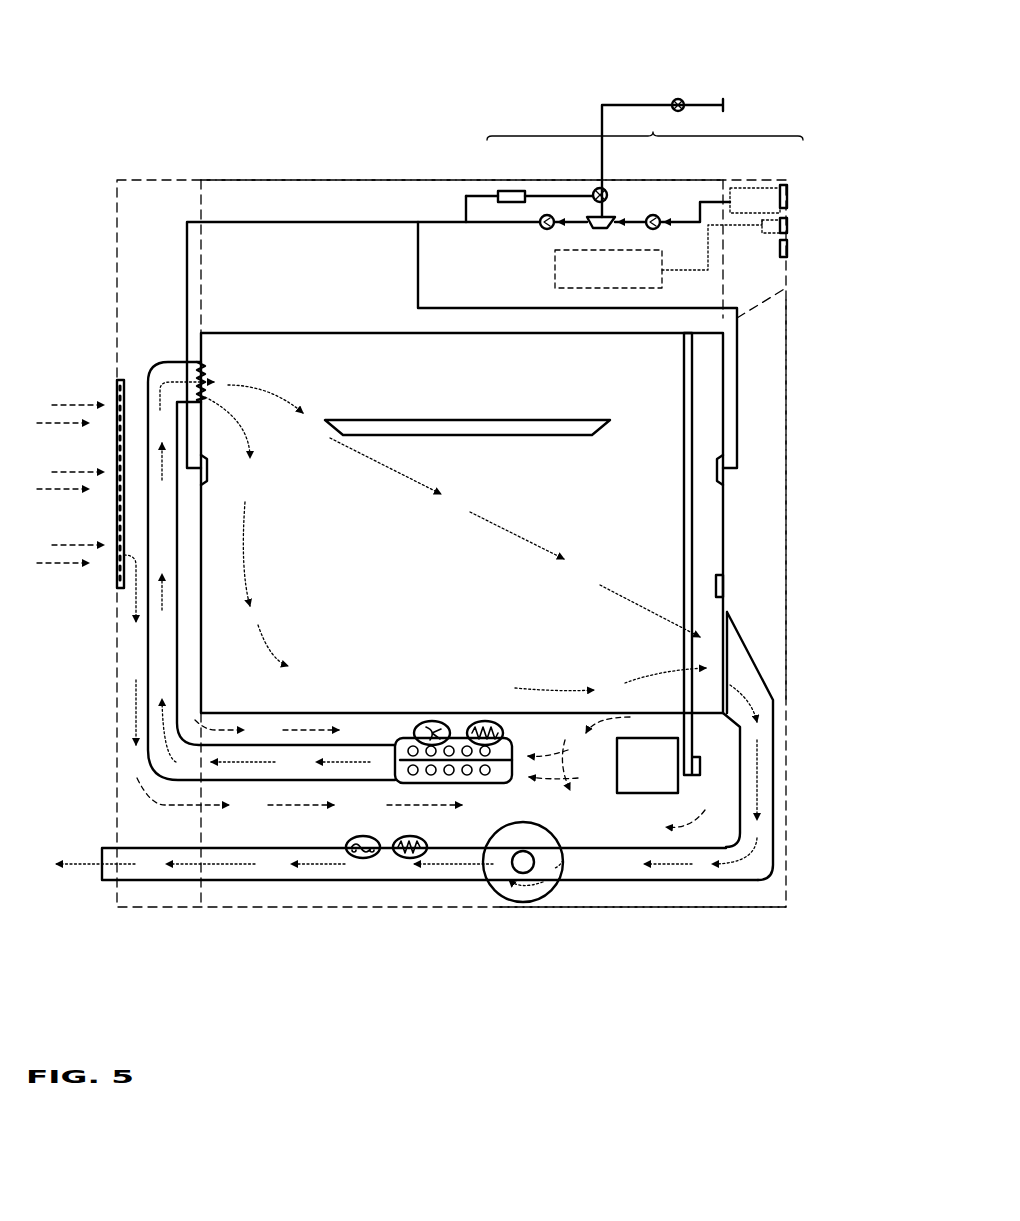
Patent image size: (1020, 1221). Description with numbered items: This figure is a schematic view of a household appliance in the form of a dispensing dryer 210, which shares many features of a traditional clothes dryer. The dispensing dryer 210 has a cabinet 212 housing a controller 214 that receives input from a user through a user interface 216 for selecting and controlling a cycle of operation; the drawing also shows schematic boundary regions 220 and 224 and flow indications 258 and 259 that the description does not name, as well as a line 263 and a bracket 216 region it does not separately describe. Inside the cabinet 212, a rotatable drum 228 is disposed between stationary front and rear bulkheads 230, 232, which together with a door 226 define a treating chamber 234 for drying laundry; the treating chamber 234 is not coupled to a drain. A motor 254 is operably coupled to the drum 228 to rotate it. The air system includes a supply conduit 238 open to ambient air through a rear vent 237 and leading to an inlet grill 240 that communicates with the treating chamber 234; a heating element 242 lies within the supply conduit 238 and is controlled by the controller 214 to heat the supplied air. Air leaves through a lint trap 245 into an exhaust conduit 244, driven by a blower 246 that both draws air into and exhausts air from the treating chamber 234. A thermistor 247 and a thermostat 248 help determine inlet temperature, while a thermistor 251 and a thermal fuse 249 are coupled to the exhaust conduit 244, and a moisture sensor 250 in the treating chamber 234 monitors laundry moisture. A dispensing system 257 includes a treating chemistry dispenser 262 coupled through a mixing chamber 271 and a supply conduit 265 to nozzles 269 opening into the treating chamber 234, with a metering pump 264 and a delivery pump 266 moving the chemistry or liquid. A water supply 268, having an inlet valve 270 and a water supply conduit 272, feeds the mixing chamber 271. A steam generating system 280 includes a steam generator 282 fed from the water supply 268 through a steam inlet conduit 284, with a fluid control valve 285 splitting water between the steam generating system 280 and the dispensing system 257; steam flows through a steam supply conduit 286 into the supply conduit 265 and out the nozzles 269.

The dispensing dryer 210 is at (765, 42).
The cabinet 212 is at (250, 175).
The controller 214 is at (555, 277).
The user interface 216 is at (788, 224).
The door 220 is at (117, 190).
The cabinet wall 224 is at (310, 178).
The door 226 is at (787, 465).
The rotatable drum 228 is at (308, 333).
The front bulkhead 230 is at (728, 890).
The rear bulkhead 232 is at (198, 205).
The treating chamber 234 is at (355, 386).
The rear vent 237 is at (118, 385).
The supply conduit 238 is at (478, 783).
The inlet grill 240 is at (200, 362).
The heating element 242 is at (445, 783).
The exhaust conduit 244 is at (233, 880).
The lint trap 245 is at (728, 640).
The blower 246 is at (548, 890).
The thermistor 247 is at (478, 720).
The thermostat 248 is at (430, 722).
The thermal fuse 249 is at (360, 858).
The moisture sensor 250 is at (724, 587).
The thermistor 251 is at (405, 858).
The motor 254 is at (655, 793).
The dispensing system 257 is at (645, 127).
The ambient air 258 is at (110, 472).
The air flow 259 is at (172, 637).
The treating chemistry dispenser 262 is at (788, 190).
The conduit 263 is at (418, 250).
The metering pump 264 is at (187, 245).
The supply conduit 265 is at (690, 220).
The delivery pump 266 is at (540, 230).
The water supply 268 is at (647, 100).
The nozzles 269 is at (201, 472).
The inlet valve 270 is at (678, 98).
The mixing chamber 271 is at (606, 217).
The water supply conduit 272 is at (700, 103).
The steam generating system 280 is at (496, 196).
The steam generator 282 is at (512, 191).
The steam inlet conduit 284 is at (555, 196).
The fluid control valve 285 is at (597, 189).
The steam supply conduit 286 is at (466, 210).